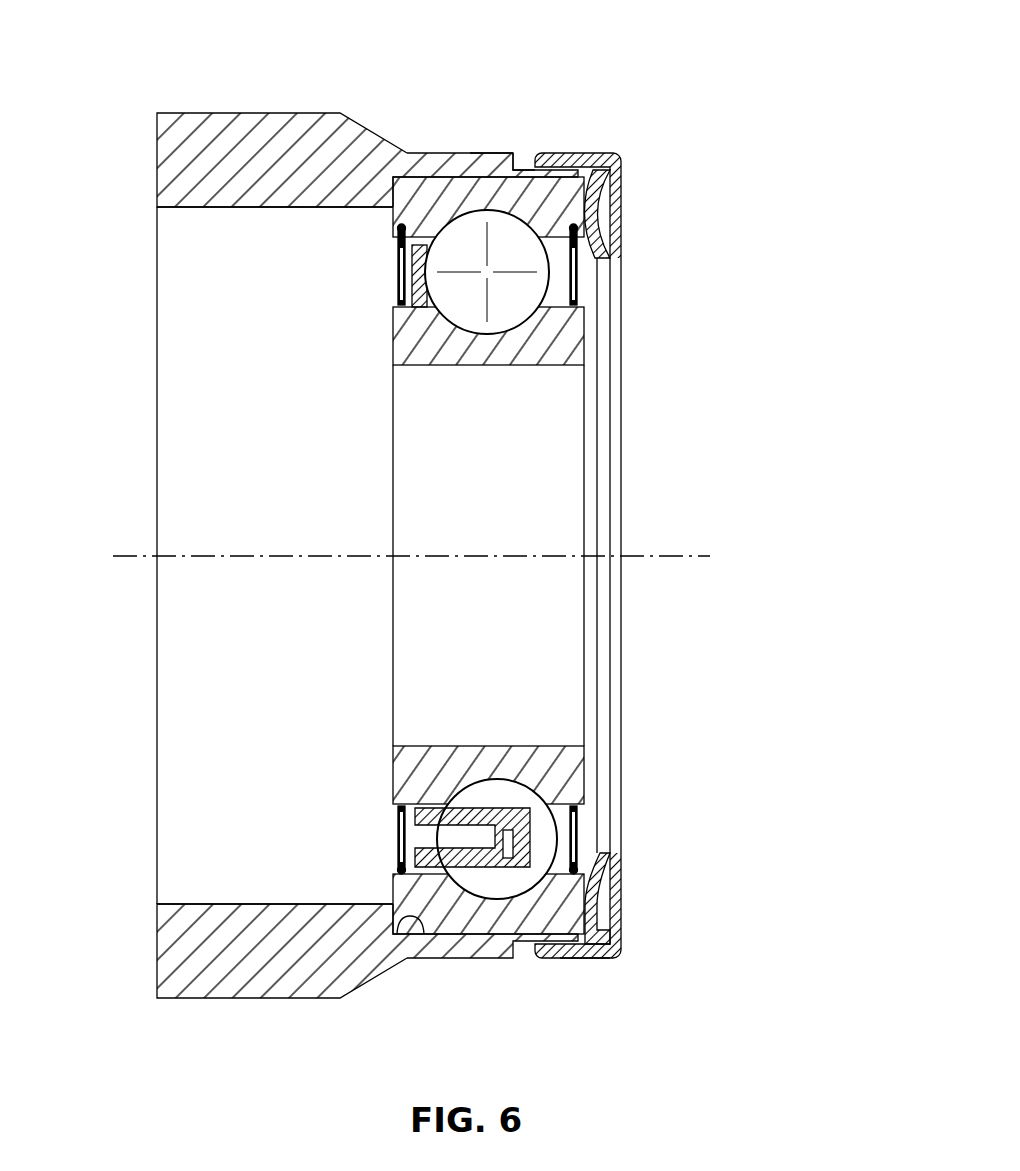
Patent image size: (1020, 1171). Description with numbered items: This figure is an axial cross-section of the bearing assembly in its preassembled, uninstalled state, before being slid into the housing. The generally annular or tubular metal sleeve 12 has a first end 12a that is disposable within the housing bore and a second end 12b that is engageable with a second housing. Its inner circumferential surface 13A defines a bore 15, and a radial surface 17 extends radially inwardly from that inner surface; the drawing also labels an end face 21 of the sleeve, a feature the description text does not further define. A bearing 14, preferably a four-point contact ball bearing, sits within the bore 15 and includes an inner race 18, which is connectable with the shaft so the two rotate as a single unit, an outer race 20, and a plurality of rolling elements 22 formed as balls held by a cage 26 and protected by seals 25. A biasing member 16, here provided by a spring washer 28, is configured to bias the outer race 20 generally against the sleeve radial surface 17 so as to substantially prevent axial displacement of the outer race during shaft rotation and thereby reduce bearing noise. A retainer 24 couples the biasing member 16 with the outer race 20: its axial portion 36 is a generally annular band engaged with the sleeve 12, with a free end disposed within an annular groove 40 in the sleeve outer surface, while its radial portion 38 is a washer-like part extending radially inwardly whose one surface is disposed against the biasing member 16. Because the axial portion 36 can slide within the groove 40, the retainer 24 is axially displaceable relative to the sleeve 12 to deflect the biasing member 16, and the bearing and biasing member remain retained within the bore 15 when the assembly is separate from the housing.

The sleeve 12 is at (231, 84).
The first end 12a is at (566, 166).
The second end 12b is at (176, 160).
The inner circumferential surface 13A is at (458, 153).
The bearing 14 is at (255, 313).
The bore 15 is at (201, 843).
The biasing member 16 is at (608, 205).
The radial surface 17 is at (418, 945).
The inner race 18 is at (386, 346).
The outer race 20 is at (386, 213).
The housing end face 21 is at (493, 150).
The rolling elements 22 is at (393, 282).
The retainer 24 is at (630, 877).
The seals 25 is at (393, 845).
The cage 26 is at (432, 815).
The spring washer 28 is at (605, 322).
The axial portion 36 is at (597, 958).
The radial portion 38 is at (627, 915).
The annular groove 40 is at (526, 168).